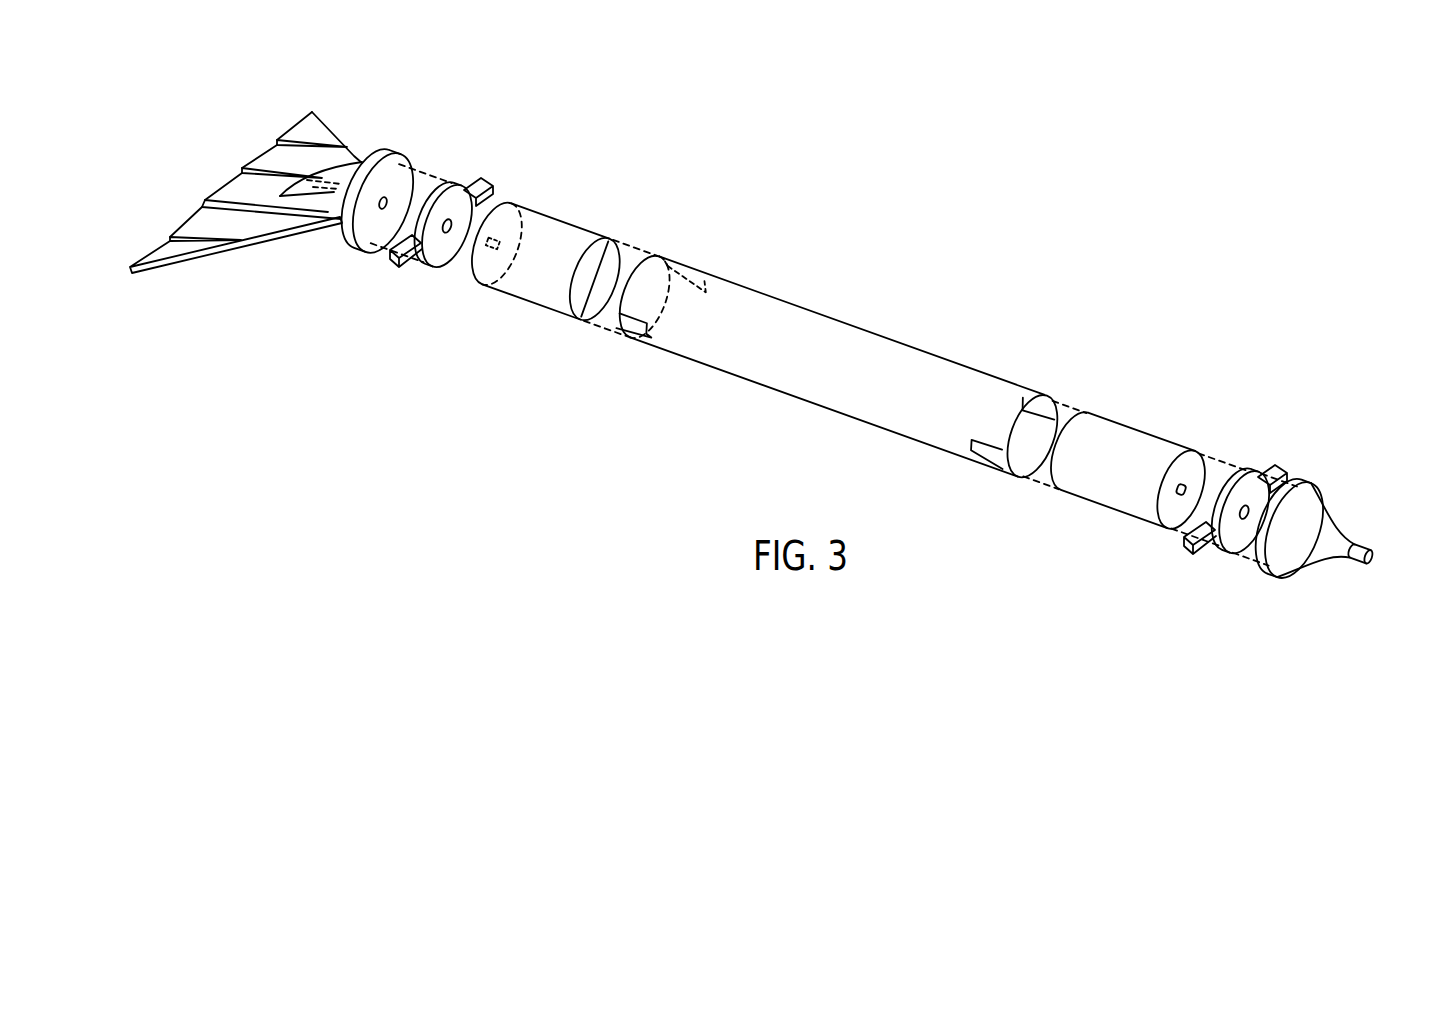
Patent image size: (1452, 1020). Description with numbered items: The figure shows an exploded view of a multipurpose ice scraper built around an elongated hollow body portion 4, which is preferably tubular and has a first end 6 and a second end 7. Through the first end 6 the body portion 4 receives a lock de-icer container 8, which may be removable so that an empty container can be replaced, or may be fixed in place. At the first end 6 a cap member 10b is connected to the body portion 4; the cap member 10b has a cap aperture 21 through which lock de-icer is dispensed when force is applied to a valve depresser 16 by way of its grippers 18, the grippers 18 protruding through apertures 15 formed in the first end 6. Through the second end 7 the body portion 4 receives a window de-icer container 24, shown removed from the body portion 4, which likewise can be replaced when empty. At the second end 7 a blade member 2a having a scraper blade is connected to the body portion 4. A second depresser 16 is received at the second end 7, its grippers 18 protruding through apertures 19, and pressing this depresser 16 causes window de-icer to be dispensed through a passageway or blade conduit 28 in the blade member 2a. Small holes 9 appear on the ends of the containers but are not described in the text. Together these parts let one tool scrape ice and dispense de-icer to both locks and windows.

The blade member 2a is at (310, 135).
The blade conduit 28 is at (333, 187).
The depresser 16 is at (438, 190).
The grippers 18 is at (490, 183).
The window de-icer container 24 is at (560, 312).
The pin hole 9 is at (493, 250).
The elongated hollow body portion 4 is at (849, 362).
The first end 6 is at (903, 438).
The second end 7 is at (690, 268).
The apertures 19 is at (640, 337).
The apertures 15 is at (988, 452).
The lock de-icer container 8 is at (1130, 428).
The cap member 10b is at (1310, 582).
The cap aperture 21 is at (1375, 553).